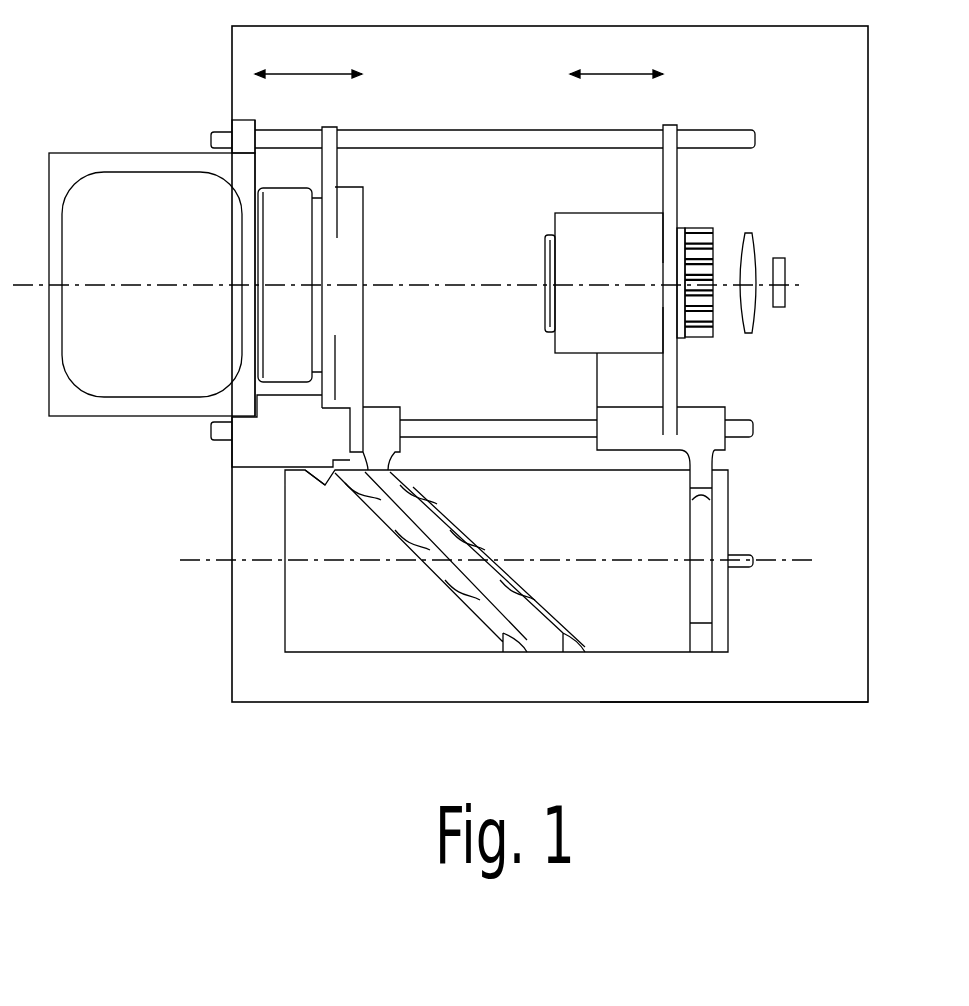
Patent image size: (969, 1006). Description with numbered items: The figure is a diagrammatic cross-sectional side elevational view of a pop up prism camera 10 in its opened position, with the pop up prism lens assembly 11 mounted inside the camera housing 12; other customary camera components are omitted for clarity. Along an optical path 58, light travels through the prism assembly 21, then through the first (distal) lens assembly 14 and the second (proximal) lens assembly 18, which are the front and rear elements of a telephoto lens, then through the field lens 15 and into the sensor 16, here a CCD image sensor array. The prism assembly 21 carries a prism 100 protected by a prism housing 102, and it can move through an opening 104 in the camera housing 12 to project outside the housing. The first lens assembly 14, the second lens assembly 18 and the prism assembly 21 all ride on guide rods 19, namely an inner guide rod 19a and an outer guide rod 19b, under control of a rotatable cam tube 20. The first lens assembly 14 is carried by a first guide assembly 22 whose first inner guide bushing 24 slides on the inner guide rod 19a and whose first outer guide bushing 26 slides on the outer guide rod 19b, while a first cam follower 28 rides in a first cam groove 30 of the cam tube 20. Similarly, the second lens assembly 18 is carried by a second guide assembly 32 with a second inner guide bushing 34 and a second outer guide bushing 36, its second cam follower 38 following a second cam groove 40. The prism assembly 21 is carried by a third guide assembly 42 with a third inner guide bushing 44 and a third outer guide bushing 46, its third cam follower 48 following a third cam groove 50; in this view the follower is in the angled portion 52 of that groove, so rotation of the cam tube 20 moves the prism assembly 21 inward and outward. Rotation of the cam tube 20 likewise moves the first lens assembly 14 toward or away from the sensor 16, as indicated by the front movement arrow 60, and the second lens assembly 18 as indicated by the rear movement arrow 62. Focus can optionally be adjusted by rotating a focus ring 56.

The pop up prism camera 10 is at (207, 490).
The pop up prism lens assembly 11 is at (627, 665).
The camera housing 12 is at (763, 705).
The first (distal) lens assembly 14 is at (288, 197).
The field lens 15 is at (748, 237).
The sensor 16 is at (779, 266).
The second (proximal) lens assembly 18 is at (629, 283).
The guide rods 19 is at (417, 138).
The inner guide rod 19a is at (502, 430).
The outer guide rod 19b is at (510, 138).
The cam tube 20 is at (611, 534).
The prism assembly 21 is at (115, 434).
The first guide assembly 22 is at (347, 260).
The first inner guide bushing 24 is at (385, 416).
The first outer guide bushing 26 is at (328, 135).
The first cam follower 28 is at (377, 475).
The first cam groove 30 is at (455, 548).
The second guide assembly 32 is at (668, 175).
The second inner guide bushing 34 is at (670, 427).
The second outer guide bushing 36 is at (670, 130).
The second cam follower 38 is at (700, 478).
The second cam groove 40 is at (700, 517).
The third guide assembly 42 is at (245, 443).
The third inner guide bushing 44 is at (288, 444).
The third outer guide bushing 46 is at (243, 135).
The third cam follower 48 is at (323, 474).
The third cam groove 50 is at (423, 567).
The angled portion 52 is at (410, 595).
The focus ring 56 is at (287, 328).
The optical path 58 is at (480, 283).
The front movement arrow 60 is at (312, 73).
The rear movement arrow 62 is at (620, 73).
The prism 100 is at (130, 329).
The prism housing 102 is at (63, 405).
The opening 104 is at (233, 120).